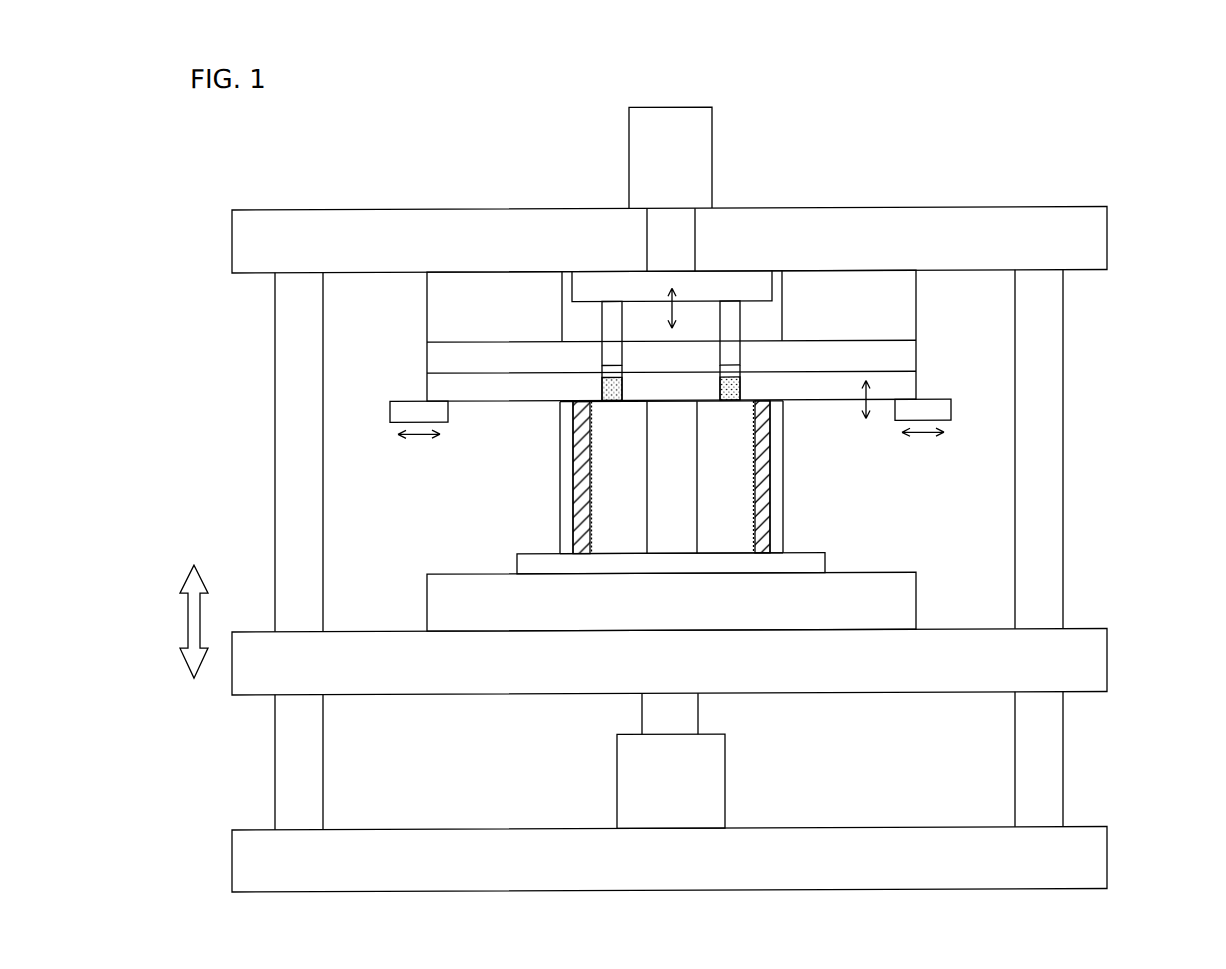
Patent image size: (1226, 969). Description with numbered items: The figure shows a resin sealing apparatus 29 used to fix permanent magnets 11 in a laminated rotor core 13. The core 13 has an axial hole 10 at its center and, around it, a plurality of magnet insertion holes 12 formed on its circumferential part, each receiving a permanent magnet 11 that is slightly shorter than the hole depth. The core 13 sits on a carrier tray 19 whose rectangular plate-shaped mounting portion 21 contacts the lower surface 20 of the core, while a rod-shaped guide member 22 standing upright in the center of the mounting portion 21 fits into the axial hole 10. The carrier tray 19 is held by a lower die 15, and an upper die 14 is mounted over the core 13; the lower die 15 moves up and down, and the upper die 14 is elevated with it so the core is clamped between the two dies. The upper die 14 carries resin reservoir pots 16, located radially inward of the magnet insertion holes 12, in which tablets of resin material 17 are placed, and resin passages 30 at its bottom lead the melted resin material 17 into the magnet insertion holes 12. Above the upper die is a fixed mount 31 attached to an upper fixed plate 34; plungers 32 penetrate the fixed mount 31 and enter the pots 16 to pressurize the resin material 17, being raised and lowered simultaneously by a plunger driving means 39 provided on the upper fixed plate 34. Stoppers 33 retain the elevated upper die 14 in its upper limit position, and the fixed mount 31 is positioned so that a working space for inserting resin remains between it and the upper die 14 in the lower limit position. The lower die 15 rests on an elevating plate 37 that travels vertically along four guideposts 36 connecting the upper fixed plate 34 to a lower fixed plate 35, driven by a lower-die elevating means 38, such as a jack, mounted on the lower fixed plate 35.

The axial hole 10 is at (651, 447).
The permanent magnet 11 is at (582, 483).
The magnet insertion hole 12 is at (574, 399).
The laminated rotor core 13 is at (786, 477).
The upper die 14 is at (922, 387).
The lower die 15 is at (920, 600).
The resin reservoir pot 16 is at (624, 394).
The resin material 17 is at (624, 384).
The carrier tray 19 is at (739, 655).
The lower surface 20 is at (778, 575).
The mounting portion 21 is at (622, 566).
The guide member 22 is at (685, 516).
The resin sealing apparatus 29 is at (1063, 154).
The resin passage 30 is at (592, 399).
The fixed mount 31 is at (427, 349).
The plunger 32 is at (608, 346).
The stopper 33 is at (412, 402).
The upper fixed plate 34 is at (1110, 234).
The lower fixed plate 35 is at (1110, 860).
The guidepost 36 is at (298, 386).
The elevating plate 37 is at (1110, 663).
The lower-die elevating means 38 is at (615, 781).
The plunger driving means 39 is at (686, 160).